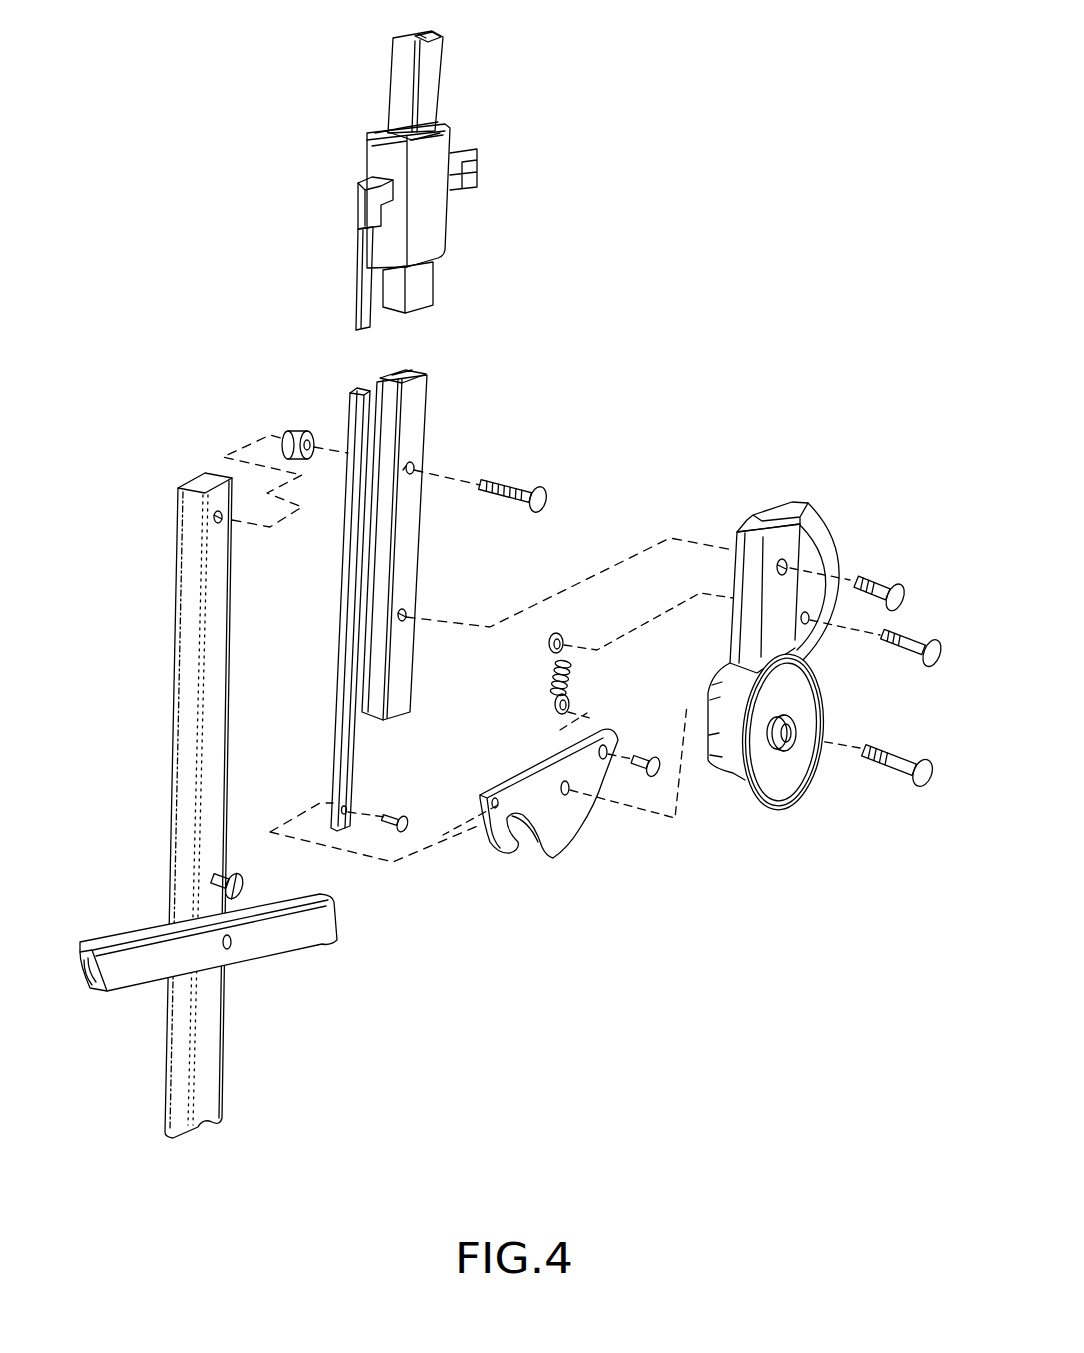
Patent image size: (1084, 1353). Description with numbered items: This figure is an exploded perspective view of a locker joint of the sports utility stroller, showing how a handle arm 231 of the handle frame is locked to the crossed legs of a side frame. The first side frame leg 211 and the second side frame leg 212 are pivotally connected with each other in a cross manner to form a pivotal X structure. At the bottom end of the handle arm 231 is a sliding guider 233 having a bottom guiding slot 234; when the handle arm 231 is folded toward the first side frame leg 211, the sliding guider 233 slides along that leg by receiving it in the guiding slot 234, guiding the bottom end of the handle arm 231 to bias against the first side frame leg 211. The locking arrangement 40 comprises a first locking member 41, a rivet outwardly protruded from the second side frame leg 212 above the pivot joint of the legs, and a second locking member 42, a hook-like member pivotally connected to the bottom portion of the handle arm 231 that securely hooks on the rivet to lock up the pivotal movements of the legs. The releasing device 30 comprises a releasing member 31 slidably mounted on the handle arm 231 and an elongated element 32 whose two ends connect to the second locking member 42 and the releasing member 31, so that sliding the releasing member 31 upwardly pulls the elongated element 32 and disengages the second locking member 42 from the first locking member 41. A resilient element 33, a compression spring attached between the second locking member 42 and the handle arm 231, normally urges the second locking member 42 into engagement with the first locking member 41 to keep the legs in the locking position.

The releasing device 30 is at (632, 192).
The releasing member 31 is at (430, 213).
The elongated element 32 is at (355, 413).
The resilient element 33 is at (552, 675).
The handle arm 231 is at (415, 407).
The sliding guider 233 is at (778, 773).
The guiding slot 234 is at (728, 771).
The first side frame leg 211 is at (285, 931).
The second side frame leg 212 is at (203, 1078).
The locking arrangement 40 is at (597, 989).
The first locking member 41 is at (233, 873).
The second locking member 42 is at (563, 833).